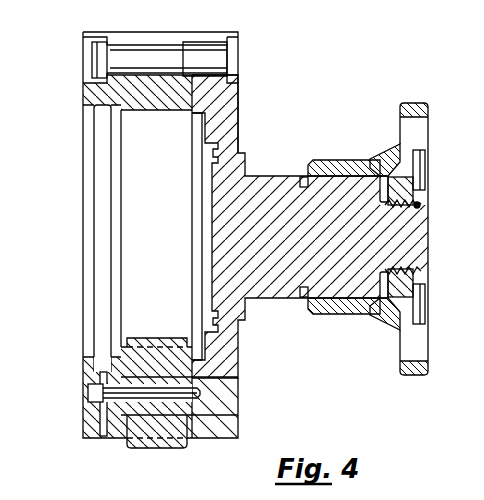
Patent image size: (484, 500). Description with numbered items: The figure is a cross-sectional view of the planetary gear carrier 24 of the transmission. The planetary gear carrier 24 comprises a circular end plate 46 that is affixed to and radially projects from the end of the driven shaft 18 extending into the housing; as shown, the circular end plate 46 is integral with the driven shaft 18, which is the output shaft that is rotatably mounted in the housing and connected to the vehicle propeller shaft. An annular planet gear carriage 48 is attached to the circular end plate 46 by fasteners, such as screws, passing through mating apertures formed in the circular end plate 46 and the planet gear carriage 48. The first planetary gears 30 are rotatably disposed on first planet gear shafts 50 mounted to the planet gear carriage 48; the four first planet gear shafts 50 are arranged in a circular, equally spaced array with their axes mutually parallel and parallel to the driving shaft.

The planetary gear carrier 24 is at (281, 51).
The circular end plate 46 is at (238, 90).
The planet gear carriage 48 is at (147, 110).
The driven shaft 18 is at (405, 223).
The first planet gear shaft 50 is at (235, 394).
The first planetary gear 30 is at (138, 425).